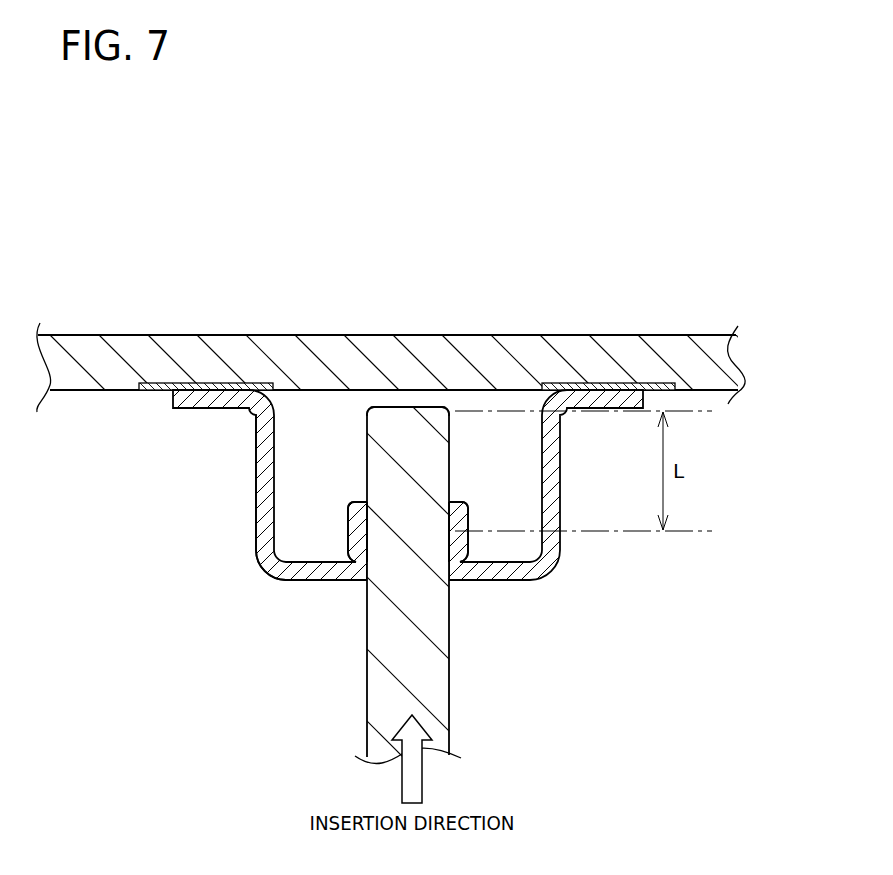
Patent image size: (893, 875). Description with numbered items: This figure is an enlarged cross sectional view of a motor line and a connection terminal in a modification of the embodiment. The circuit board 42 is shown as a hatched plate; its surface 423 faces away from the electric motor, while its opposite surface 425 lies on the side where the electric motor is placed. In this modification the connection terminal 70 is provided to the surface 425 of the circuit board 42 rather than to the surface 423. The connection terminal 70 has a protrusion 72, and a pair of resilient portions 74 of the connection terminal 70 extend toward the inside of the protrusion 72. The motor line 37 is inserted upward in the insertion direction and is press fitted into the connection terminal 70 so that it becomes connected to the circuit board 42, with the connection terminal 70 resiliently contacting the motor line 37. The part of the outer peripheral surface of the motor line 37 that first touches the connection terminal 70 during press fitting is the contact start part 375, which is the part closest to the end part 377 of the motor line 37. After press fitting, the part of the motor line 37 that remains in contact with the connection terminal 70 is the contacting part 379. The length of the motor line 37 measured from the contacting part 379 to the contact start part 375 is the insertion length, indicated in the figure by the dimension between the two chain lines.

The motor line 37 is at (411, 525).
The circuit board 42 is at (418, 361).
The connection terminal 70 is at (420, 536).
The protrusion 72 is at (265, 571).
The resilient portions 74 is at (355, 535).
The contact start part 375 is at (367, 410).
The end part 377 is at (397, 405).
The contacting part 379 is at (357, 525).
The surface of the circuit board 423 is at (698, 335).
The surface of the circuit board 425 is at (732, 398).